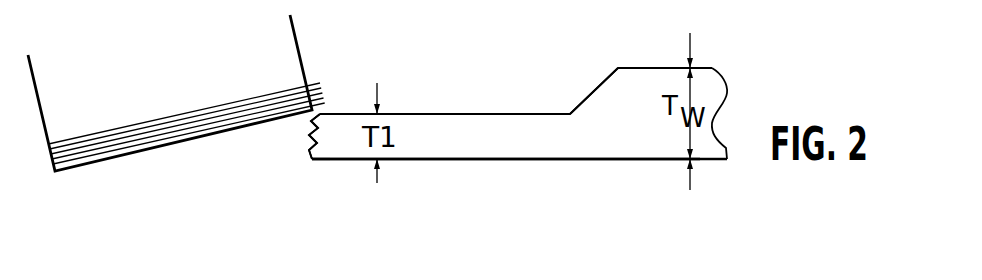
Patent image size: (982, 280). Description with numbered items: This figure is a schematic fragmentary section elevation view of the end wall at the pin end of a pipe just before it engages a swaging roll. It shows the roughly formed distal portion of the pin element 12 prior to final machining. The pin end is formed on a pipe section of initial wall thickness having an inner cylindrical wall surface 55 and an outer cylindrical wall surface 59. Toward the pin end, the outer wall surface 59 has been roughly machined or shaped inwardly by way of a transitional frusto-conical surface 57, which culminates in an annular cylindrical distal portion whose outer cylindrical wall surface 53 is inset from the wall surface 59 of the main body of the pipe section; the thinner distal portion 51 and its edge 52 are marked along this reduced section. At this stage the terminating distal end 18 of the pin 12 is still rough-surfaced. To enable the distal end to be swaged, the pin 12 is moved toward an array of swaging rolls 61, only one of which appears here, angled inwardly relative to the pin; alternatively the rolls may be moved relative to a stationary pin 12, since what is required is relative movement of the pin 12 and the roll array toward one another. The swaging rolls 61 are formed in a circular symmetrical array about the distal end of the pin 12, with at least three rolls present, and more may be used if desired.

The pin element 12 is at (640, 126).
The terminating distal end 18 is at (310, 133).
The thinned wafer body portion 51 is at (344, 142).
The wafer edge 52 is at (310, 157).
The outer cylindrical wall surface of distal portion 53 is at (475, 114).
The inner cylindrical wall surface 55 is at (457, 159).
The transitional frusto-conical surface 57 is at (592, 93).
The outer cylindrical wall surface 59 is at (660, 68).
The swaging rolls 61 is at (138, 152).